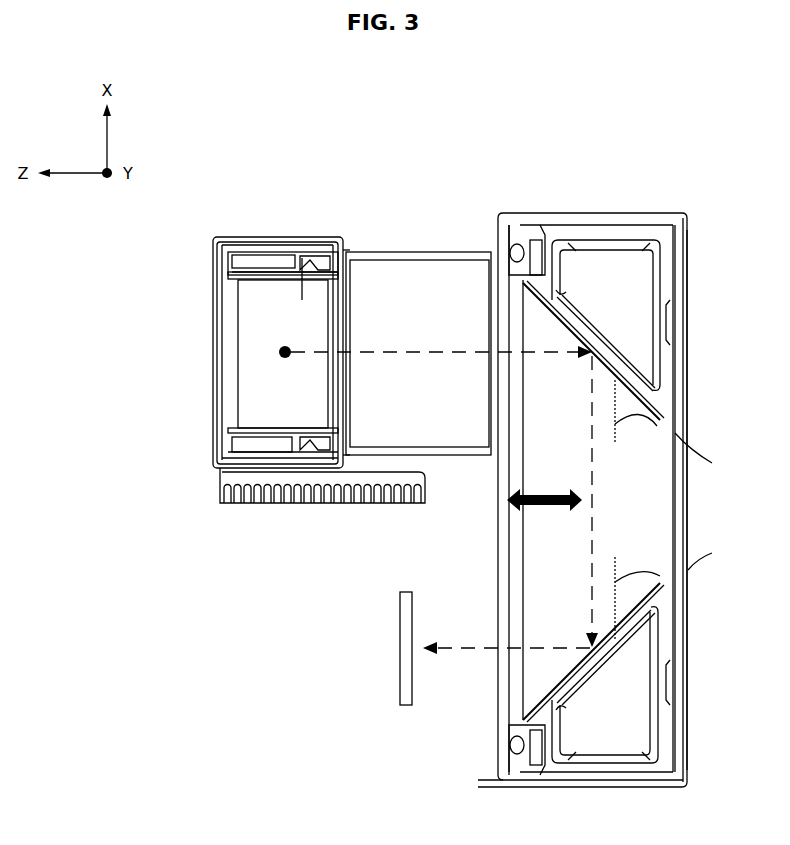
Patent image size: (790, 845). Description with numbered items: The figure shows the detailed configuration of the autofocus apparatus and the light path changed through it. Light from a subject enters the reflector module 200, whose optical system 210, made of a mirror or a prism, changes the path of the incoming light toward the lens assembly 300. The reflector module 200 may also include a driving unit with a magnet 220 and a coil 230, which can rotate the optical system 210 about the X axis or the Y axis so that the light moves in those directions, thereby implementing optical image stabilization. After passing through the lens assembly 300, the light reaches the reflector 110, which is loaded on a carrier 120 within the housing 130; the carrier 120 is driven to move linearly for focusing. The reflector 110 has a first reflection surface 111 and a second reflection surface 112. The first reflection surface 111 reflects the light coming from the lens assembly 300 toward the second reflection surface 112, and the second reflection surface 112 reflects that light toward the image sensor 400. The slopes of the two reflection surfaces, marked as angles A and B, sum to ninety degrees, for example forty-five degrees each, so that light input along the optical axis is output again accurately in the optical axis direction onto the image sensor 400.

The reflector 110 is at (642, 500).
The first reflection surface 111 is at (620, 342).
The second reflection surface 112 is at (560, 680).
The carrier 120 is at (660, 398).
The housing 130 is at (678, 693).
The reflector module 200 is at (292, 324).
The optical system 210 is at (303, 266).
The magnet 220 is at (227, 455).
The coil 230 is at (222, 460).
The lens assembly 300 is at (396, 272).
The image sensor 400 is at (400, 660).